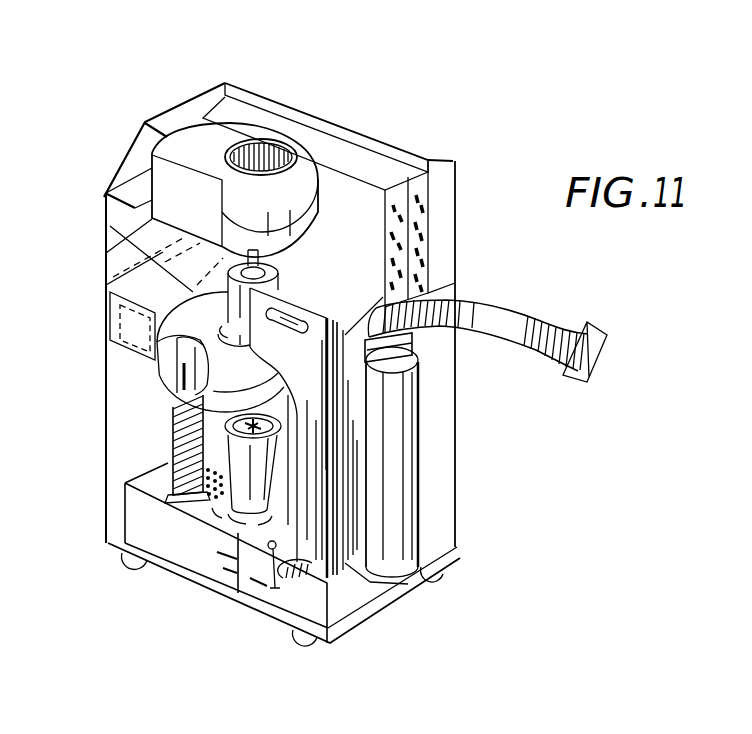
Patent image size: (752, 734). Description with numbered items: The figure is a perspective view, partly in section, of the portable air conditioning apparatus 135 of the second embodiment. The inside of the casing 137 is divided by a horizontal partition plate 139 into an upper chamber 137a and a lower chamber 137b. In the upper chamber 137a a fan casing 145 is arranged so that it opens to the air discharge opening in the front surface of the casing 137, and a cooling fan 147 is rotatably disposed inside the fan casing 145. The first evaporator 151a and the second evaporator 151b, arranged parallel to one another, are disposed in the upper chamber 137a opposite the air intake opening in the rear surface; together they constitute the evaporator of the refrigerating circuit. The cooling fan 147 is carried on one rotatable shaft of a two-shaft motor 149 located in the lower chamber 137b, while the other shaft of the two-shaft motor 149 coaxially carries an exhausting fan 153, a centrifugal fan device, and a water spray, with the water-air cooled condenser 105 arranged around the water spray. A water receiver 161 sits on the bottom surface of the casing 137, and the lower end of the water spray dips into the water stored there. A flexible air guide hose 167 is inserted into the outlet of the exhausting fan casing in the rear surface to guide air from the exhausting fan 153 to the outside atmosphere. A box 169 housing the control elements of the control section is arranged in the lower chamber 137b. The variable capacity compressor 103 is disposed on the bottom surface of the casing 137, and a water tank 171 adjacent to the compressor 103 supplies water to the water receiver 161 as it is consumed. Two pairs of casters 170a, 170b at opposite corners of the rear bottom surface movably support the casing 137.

The portable air conditioning apparatus 135 is at (163, 92).
The fan casing 145 is at (200, 135).
The cooling fan 147 is at (264, 138).
The first evaporator 151a is at (327, 152).
The second evaporator 151b is at (388, 160).
The casing 137 is at (453, 160).
The upper chamber 137a is at (377, 260).
The lower chamber 137b is at (126, 421).
The horizontal partition plate 139 is at (136, 209).
The two-shaft motor 149 is at (200, 258).
The box 169 is at (118, 316).
The exhausting fan 153 is at (183, 372).
The water-air cooled condenser 105 is at (173, 458).
The water receiver 161 is at (137, 532).
The caster 170a is at (141, 566).
The caster 170b is at (300, 640).
The water tank 171 is at (368, 580).
The variable capacity compressor 103 is at (398, 480).
The flexible air guide hose 167 is at (512, 318).